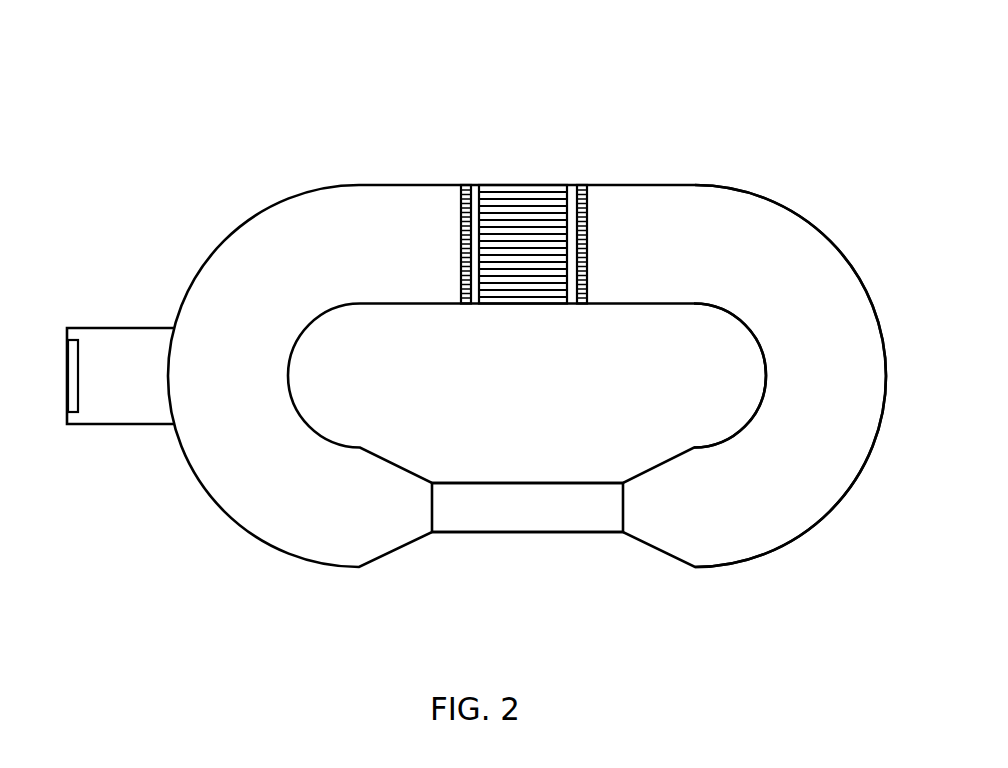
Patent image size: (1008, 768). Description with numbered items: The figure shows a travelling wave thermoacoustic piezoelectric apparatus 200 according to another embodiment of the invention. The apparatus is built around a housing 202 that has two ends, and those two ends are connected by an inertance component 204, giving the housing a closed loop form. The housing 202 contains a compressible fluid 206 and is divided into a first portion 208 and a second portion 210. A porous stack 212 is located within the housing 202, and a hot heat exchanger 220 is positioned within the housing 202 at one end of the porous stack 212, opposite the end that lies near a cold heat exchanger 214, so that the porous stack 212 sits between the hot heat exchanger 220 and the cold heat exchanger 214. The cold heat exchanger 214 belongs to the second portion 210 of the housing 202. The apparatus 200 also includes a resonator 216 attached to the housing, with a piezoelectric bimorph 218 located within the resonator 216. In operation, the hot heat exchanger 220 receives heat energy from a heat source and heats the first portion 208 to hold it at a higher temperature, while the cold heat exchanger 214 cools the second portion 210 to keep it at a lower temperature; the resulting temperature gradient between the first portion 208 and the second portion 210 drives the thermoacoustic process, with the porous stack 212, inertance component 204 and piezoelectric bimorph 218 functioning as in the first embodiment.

The travelling wave thermoacoustic piezoelectric apparatus 200 is at (744, 72).
The housing 202 is at (527, 342).
The inertance component 204 is at (527, 507).
The compressible fluid 206 is at (793, 376).
The first portion 208 is at (766, 376).
The second portion 210 is at (495, 394).
The porous stack 212 is at (531, 213).
The cold heat exchanger 214 is at (492, 212).
The resonator 216 is at (121, 376).
The piezoelectric bimorph 218 is at (52, 397).
The hot heat exchanger 220 is at (607, 212).